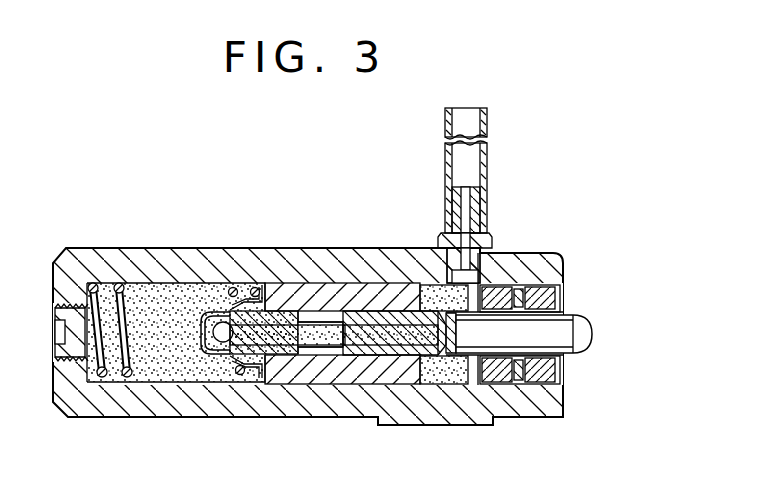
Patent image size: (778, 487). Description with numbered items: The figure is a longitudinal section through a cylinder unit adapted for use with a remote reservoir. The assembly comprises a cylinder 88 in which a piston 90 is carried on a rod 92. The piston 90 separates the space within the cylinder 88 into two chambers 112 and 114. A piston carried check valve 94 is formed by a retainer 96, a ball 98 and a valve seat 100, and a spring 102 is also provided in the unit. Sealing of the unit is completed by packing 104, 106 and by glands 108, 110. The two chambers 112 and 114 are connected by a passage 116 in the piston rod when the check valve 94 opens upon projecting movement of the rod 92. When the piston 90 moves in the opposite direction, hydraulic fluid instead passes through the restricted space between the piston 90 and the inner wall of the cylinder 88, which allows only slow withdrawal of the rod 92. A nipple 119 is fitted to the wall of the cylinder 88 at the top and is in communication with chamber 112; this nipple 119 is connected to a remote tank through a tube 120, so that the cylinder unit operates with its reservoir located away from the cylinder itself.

The cylinder 88 is at (357, 248).
The piston 90 is at (272, 297).
The rod 92 is at (562, 328).
The piston carried check valve 94 is at (178, 384).
The retainer 96 is at (226, 289).
The ball 98 is at (201, 366).
The valve seat 100 is at (295, 357).
The spring 102 is at (93, 383).
The packing 104 is at (502, 385).
The packing 106 is at (563, 380).
The gland 108 is at (458, 387).
The gland 110 is at (540, 385).
The chamber 112 is at (428, 290).
The chamber 114 is at (173, 348).
The passage 116 is at (412, 357).
The nipple 119 is at (493, 240).
The tube 120 is at (487, 162).